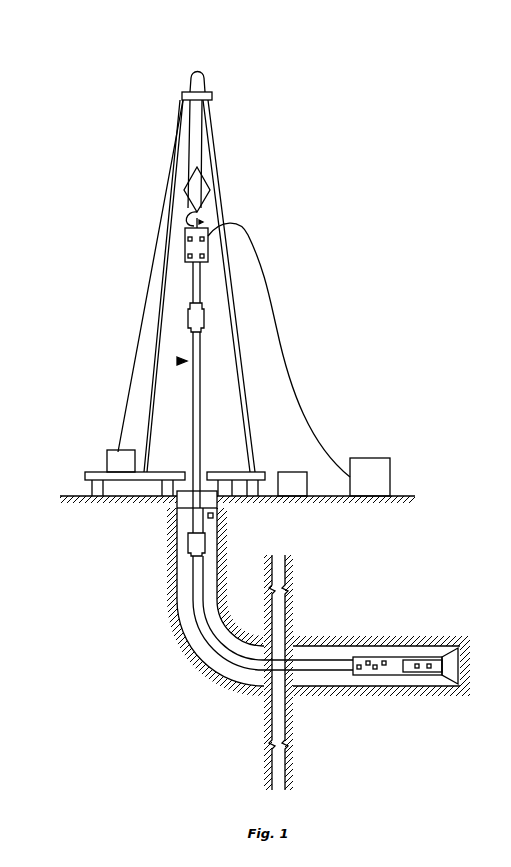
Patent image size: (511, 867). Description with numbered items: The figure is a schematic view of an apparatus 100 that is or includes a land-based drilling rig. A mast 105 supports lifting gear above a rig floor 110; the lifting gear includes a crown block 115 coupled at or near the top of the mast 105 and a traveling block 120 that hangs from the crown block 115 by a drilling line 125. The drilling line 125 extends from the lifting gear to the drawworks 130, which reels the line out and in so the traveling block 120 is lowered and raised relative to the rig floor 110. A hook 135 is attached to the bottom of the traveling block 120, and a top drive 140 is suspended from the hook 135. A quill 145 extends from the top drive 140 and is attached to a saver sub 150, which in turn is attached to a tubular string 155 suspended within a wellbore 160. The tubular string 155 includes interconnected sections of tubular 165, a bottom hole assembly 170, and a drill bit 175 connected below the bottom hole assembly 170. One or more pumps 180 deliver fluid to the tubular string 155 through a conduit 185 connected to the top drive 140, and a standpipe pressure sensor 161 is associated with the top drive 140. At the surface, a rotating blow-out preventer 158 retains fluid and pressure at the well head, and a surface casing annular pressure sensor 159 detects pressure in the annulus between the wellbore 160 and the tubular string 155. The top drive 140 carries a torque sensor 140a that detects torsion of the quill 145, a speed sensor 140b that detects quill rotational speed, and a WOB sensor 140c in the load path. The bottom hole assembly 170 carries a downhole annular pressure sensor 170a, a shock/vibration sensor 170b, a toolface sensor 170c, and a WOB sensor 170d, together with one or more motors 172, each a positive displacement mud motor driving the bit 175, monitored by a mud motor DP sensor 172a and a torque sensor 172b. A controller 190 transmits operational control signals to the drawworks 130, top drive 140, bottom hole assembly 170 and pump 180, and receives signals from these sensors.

The apparatus 100 is at (148, 57).
The mast 105 is at (213, 119).
The rig floor 110 is at (86, 477).
The crown block 115 is at (204, 77).
The traveling block 120 is at (218, 192).
The drilling line 125 is at (188, 122).
The drawworks 130 is at (108, 453).
The hook 135 is at (186, 214).
The top drive 140 is at (188, 244).
The torque sensor 140a is at (187, 256).
The speed sensor 140b is at (206, 241).
The WOB sensor 140c is at (206, 257).
The quill 145 is at (193, 283).
The saver sub 150 is at (188, 316).
The tubular string 155 is at (177, 361).
The rotating blow-out preventer 158 is at (180, 504).
The surface casing annular pressure sensor 159 is at (215, 515).
The wellbore 160 is at (180, 587).
The standpipe pressure sensor 161 is at (186, 236).
The tubular 165 is at (190, 430).
The bottom hole assembly 170 is at (424, 674).
The downhole annular pressure sensor 170a is at (358, 675).
The shock/vibration sensor 170b is at (368, 657).
The toolface sensor 170c is at (375, 675).
The WOB sensor 170d is at (384, 660).
The motor 172 is at (432, 674).
The mud motor DP sensor 172a is at (418, 660).
The torque sensor 172b is at (430, 660).
The drill bit 175 is at (487, 640).
The pump 180 is at (380, 458).
The conduit 185 is at (297, 416).
The controller 190 is at (291, 472).